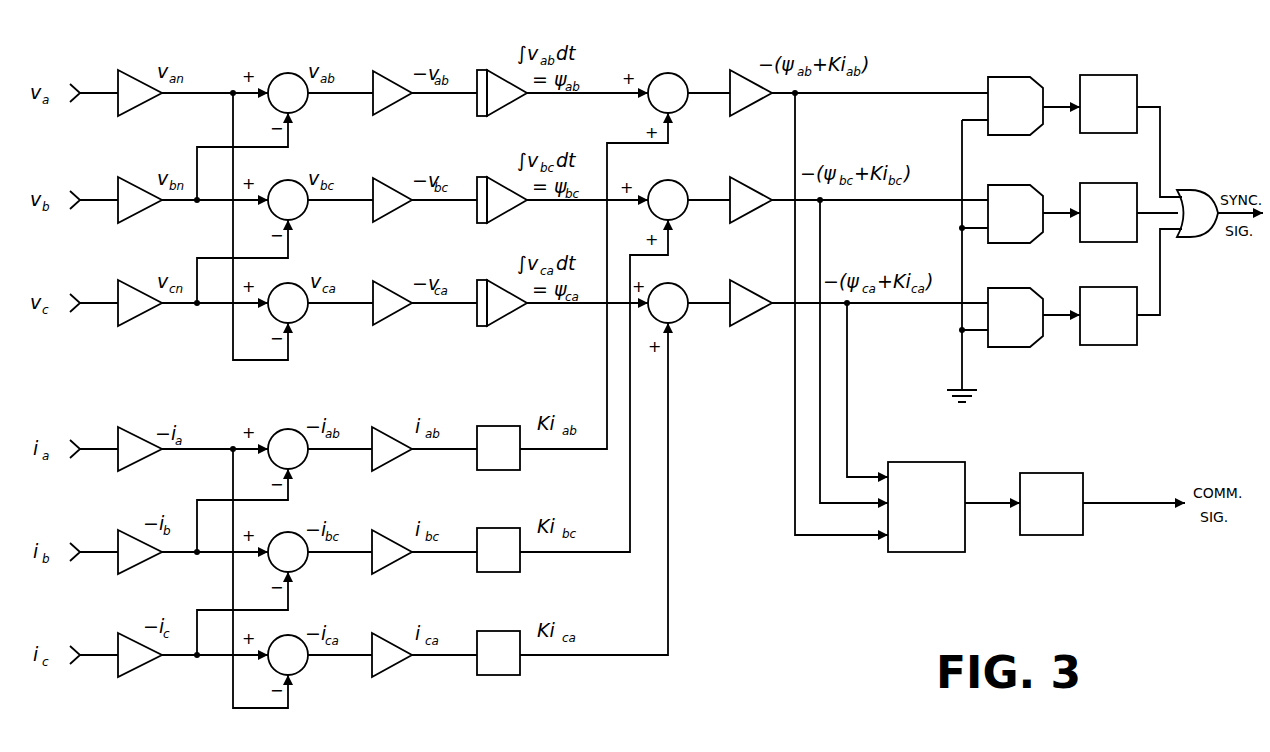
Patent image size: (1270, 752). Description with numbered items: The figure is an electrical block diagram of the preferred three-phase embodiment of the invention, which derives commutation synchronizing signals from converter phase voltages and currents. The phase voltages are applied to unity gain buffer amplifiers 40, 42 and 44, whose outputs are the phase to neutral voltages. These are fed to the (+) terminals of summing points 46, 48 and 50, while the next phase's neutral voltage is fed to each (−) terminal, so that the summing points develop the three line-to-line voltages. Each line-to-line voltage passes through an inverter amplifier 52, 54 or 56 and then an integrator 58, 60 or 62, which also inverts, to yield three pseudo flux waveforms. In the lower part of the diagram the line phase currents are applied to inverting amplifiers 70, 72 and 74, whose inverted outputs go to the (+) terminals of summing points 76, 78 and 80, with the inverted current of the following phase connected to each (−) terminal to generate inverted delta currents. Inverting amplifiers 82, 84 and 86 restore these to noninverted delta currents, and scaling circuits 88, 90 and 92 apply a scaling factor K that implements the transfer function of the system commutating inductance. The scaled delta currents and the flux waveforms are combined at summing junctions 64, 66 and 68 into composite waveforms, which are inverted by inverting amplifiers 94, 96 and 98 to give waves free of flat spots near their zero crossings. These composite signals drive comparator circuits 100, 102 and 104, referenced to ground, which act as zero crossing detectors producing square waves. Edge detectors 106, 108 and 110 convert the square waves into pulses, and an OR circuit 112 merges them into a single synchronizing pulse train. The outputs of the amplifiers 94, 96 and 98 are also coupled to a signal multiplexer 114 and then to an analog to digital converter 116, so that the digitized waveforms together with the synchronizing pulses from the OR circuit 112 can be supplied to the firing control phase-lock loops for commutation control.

The unity gain buffer amplifier 40 is at (130, 70).
The unity gain buffer amplifier 42 is at (130, 179).
The unity gain buffer amplifier 44 is at (130, 282).
The summing point 46 is at (283, 74).
The summing point 48 is at (281, 187).
The summing point 50 is at (287, 284).
The inverter amplifier 52 is at (389, 73).
The inverter amplifier 54 is at (389, 181).
The inverter amplifier 56 is at (379, 280).
The integrator 58 is at (512, 100).
The integrator 60 is at (512, 207).
The integrator 62 is at (512, 312).
The summing junction 64 is at (680, 75).
The summing junction 66 is at (681, 185).
The summing junction 68 is at (683, 290).
The inverting amplifier 70 is at (137, 436).
The inverting amplifier 72 is at (137, 531).
The inverting amplifier 74 is at (131, 641).
The summing point 76 is at (281, 432).
The summing point 78 is at (281, 536).
The summing point 80 is at (280, 636).
The inverting amplifier 82 is at (390, 431).
The inverting amplifier 84 is at (392, 537).
The inverting amplifier 86 is at (392, 641).
The scaling circuit 88 is at (503, 426).
The scaling circuit 90 is at (503, 528).
The scaling circuit 92 is at (503, 629).
The inverting amplifier 94 is at (748, 103).
The inverting amplifier 96 is at (751, 212).
The inverting amplifier 98 is at (751, 317).
The comparator circuit 100 is at (1027, 76).
The comparator circuit 102 is at (1027, 184).
The comparator circuit 104 is at (1028, 288).
The edge detector 106 is at (1124, 75).
The edge detector 108 is at (1119, 182).
The edge detector 110 is at (1122, 287).
The OR circuit 112 is at (1190, 189).
The signal multiplexer 114 is at (930, 462).
The analog to digital converter 116 is at (1061, 473).